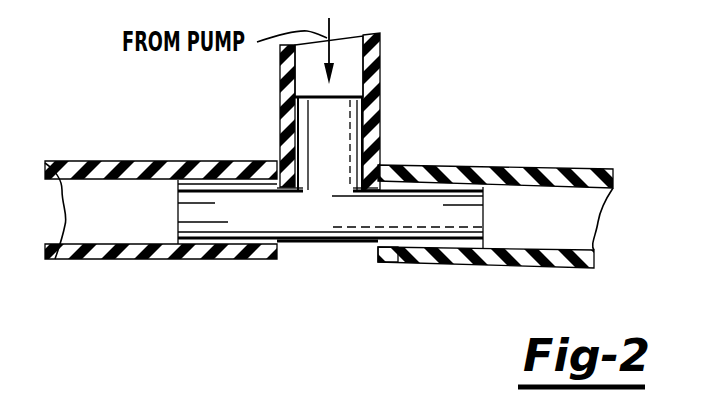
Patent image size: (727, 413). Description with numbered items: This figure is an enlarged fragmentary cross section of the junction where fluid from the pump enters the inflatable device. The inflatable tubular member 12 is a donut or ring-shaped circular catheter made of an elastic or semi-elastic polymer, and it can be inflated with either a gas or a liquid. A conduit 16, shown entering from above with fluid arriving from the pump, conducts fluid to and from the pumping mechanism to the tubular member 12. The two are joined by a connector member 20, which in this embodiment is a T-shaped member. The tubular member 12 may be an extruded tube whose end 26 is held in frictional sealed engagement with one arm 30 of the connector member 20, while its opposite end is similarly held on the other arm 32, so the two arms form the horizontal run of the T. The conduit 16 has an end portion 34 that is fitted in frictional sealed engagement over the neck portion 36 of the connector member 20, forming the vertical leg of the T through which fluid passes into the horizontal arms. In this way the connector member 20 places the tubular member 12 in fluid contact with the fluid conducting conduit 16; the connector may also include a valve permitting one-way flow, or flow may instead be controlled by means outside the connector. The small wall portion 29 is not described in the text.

The tubular member 12 is at (582, 163).
The conduit 16 is at (379, 56).
The connector member 20 is at (325, 252).
The end of tubular member 26 is at (272, 163).
The wall portion of conduit 29 is at (387, 263).
The arm of connector 30 is at (198, 228).
The arm of connector 32 is at (457, 236).
The end portion of conduit 34 is at (378, 143).
The neck portion of connector 36 is at (343, 132).